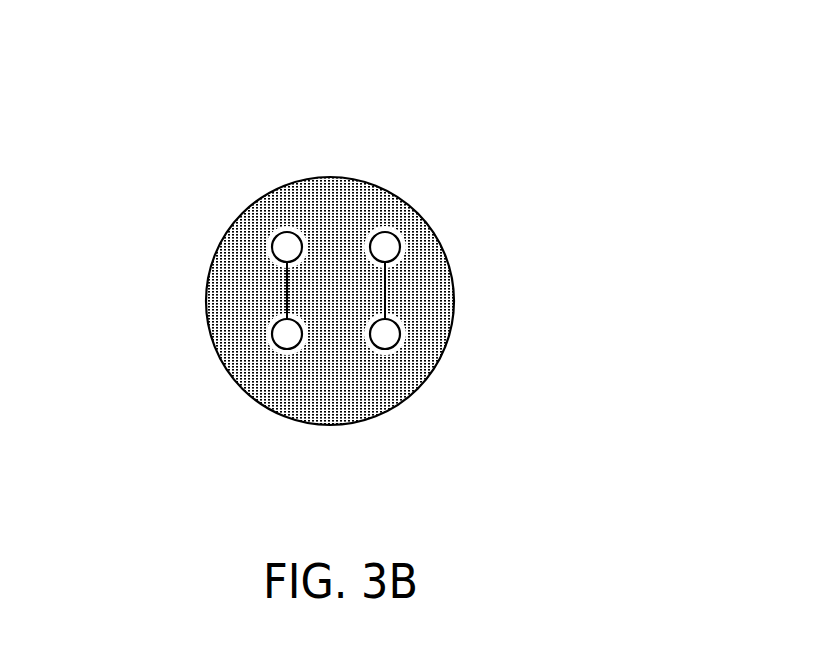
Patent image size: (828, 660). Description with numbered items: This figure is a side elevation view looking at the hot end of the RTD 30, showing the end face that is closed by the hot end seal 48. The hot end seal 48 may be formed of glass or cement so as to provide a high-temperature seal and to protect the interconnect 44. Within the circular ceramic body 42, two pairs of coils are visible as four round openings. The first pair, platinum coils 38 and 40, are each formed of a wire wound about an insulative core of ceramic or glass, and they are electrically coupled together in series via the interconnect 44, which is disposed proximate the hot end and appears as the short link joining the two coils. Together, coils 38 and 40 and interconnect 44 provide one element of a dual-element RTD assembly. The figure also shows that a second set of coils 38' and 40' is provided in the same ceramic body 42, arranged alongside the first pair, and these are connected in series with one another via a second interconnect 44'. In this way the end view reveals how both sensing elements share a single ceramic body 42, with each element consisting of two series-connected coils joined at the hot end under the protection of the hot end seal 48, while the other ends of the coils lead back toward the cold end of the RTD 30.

The RTD 30 is at (330, 268).
The platinum coil 38 is at (207, 415).
The platinum coil 38' is at (457, 391).
The platinum coil 40 is at (190, 213).
The platinum coil 40' is at (457, 183).
The ceramic body 42 is at (453, 327).
The interconnect 44 is at (175, 314).
The interconnect 44' is at (476, 251).
The hot end seal 48 is at (454, 278).